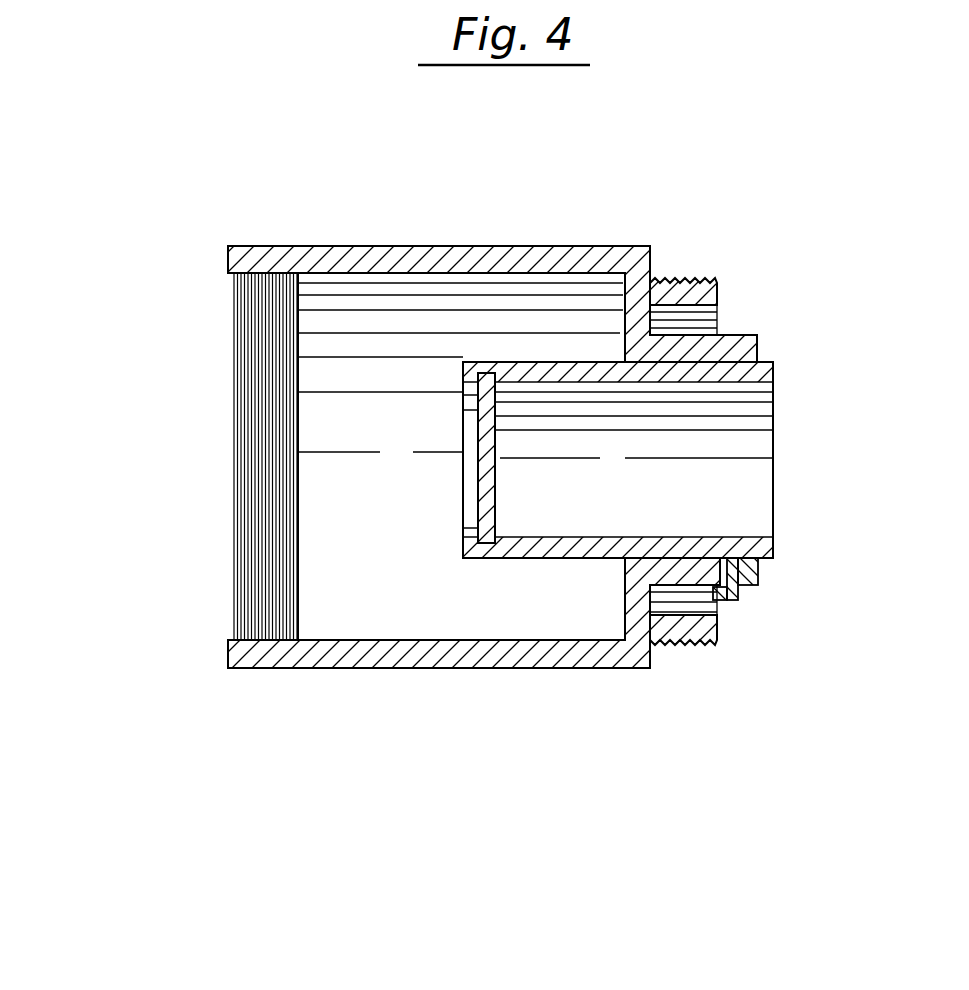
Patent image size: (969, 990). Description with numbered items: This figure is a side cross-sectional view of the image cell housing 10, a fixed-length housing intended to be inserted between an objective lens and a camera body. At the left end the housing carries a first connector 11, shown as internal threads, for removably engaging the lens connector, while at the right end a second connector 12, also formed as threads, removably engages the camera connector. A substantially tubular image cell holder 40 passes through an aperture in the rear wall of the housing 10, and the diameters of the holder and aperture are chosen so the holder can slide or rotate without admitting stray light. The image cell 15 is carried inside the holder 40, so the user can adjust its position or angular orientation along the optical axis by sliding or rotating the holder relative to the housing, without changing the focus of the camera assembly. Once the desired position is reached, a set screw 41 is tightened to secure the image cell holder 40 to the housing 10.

The image cell housing 10 is at (338, 716).
The first connector 11 is at (272, 258).
The second connector 12 is at (688, 279).
The image cell 15 is at (478, 463).
The image cell holder 40 is at (530, 362).
The set screw 41 is at (743, 600).